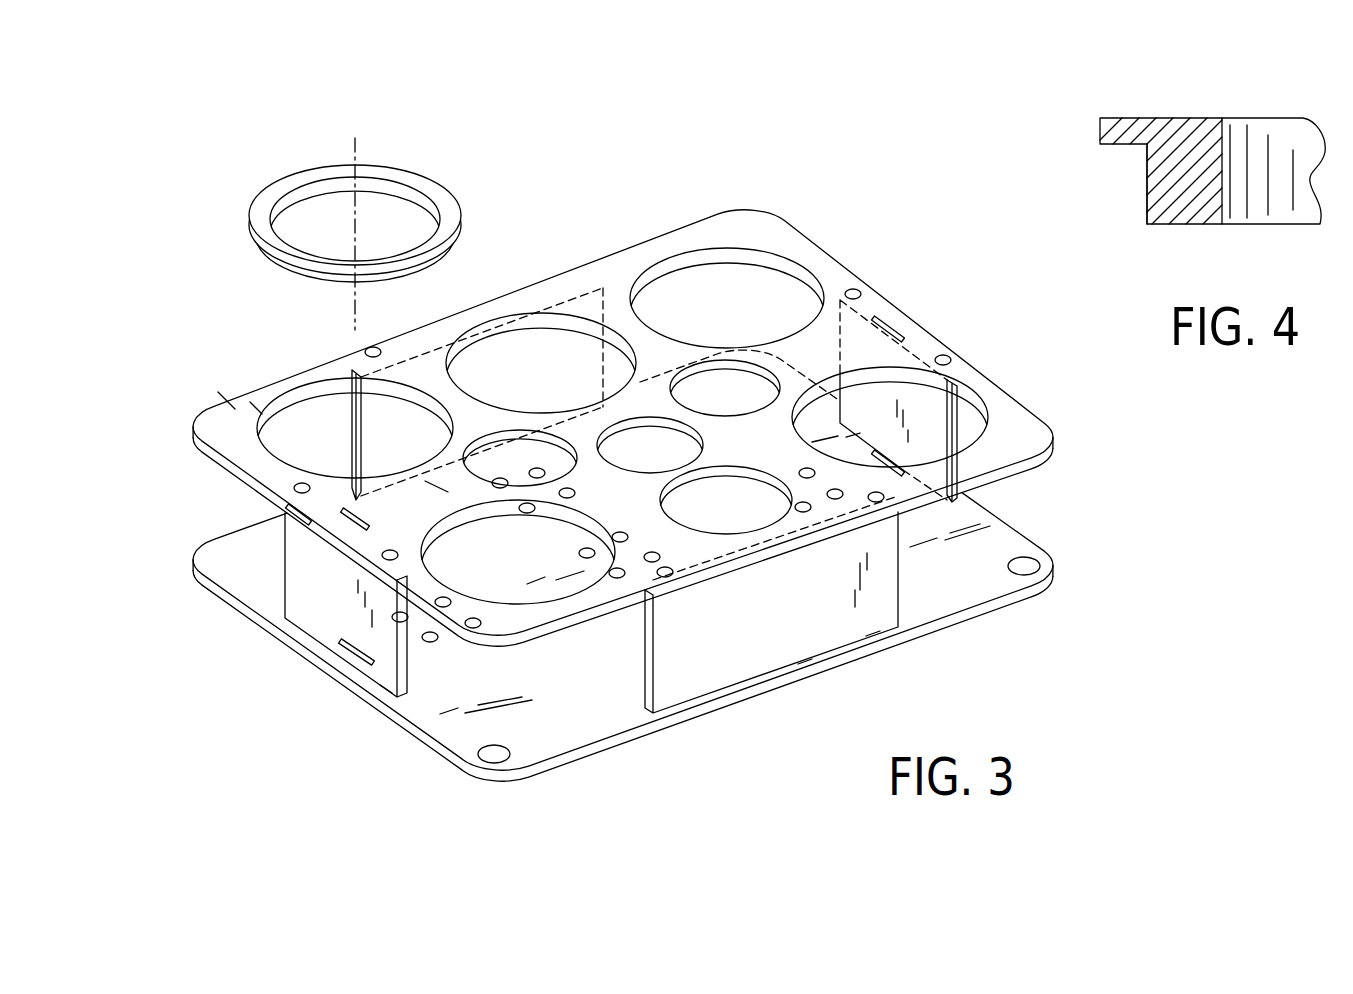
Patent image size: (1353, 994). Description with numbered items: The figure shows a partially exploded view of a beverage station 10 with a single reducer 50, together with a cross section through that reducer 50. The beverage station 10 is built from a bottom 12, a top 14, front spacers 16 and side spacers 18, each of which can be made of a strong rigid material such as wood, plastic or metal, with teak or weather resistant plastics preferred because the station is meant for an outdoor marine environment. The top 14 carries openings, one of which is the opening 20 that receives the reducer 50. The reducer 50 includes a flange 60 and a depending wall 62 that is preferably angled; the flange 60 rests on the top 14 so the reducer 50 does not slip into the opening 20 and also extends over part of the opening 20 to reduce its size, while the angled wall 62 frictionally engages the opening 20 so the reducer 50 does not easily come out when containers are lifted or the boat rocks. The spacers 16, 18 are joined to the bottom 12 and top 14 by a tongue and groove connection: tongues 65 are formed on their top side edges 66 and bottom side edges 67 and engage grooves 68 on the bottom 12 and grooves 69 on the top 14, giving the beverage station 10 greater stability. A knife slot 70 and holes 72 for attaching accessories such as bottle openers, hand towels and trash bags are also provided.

In FIG. 3, the beverage station 10 is at (677, 199).
In FIG. 3, the bottom 12 is at (1035, 528).
In FIG. 3, the top 14 is at (823, 243).
In FIG. 3, the front spacers 16 is at (300, 615).
In FIG. 3, the side spacers 18 is at (697, 680).
In FIG. 3, the opening 20 is at (290, 400).
In FIG. 3, the reducer 50 is at (292, 172).
In FIG. 4, the reducer 50 is at (1262, 118).
In FIG. 3, the flange 60 is at (418, 181).
In FIG. 4, the flange 60 is at (1160, 118).
In FIG. 3, the depending wall 62 is at (283, 265).
In FIG. 4, the depending wall 62 is at (1147, 185).
In FIG. 3, the tongues 65 is at (930, 325).
In FIG. 3, the top side edges 66 is at (548, 300).
In FIG. 3, the bottom side edges 67 is at (385, 680).
In FIG. 3, the grooves 68 is at (342, 650).
In FIG. 3, the grooves 69 is at (800, 320).
In FIG. 3, the knife slot 70 is at (360, 500).
In FIG. 3, the holes 72 is at (1043, 563).